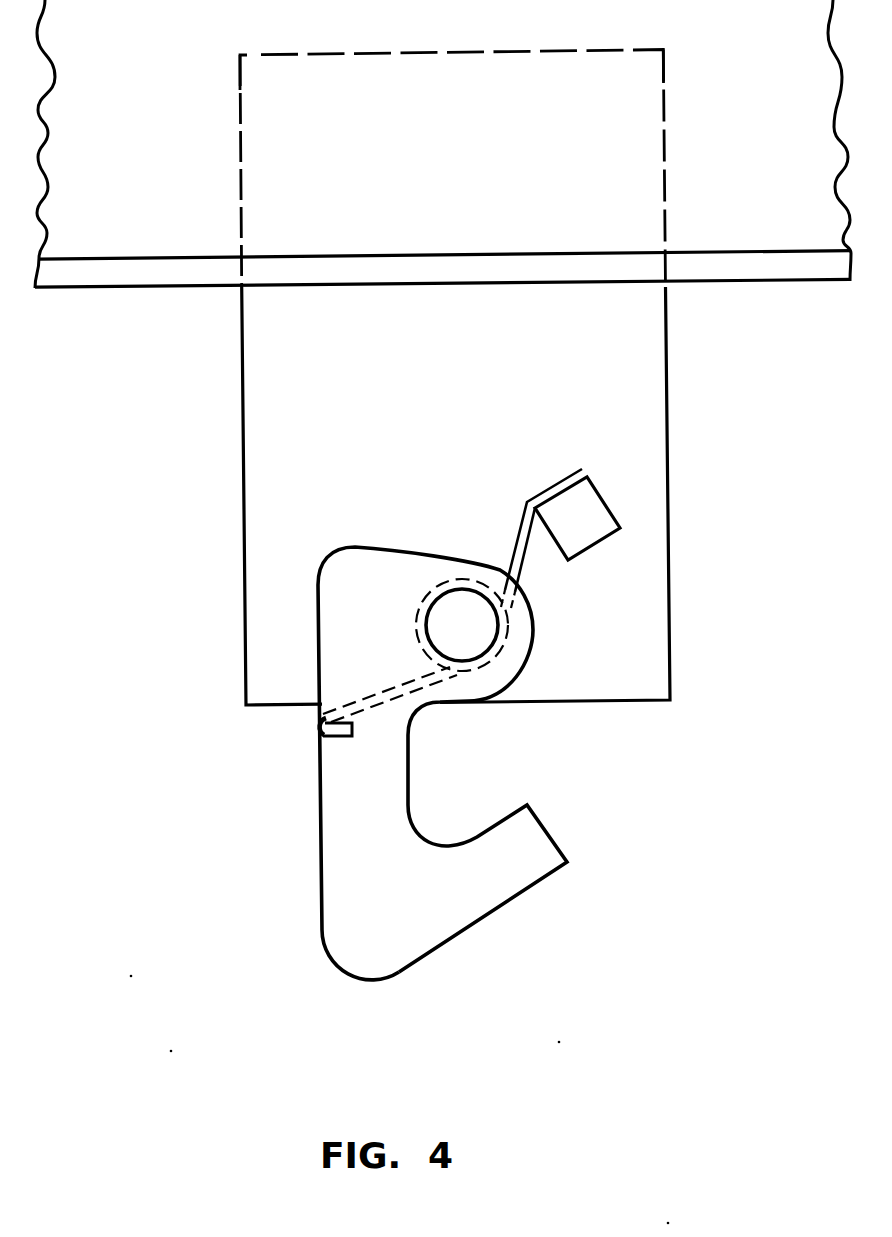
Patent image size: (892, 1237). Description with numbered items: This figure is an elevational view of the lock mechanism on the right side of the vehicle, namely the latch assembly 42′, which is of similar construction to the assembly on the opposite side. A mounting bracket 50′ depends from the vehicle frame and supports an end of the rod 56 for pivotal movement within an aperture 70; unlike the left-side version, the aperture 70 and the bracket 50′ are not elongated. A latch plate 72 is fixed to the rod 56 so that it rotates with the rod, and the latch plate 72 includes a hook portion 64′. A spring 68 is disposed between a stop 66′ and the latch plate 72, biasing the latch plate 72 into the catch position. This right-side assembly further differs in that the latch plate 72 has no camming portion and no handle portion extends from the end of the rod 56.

The latch assembly 42′ is at (496, 716).
The mounting bracket 50′ is at (642, 392).
The rod 56 is at (482, 632).
The hook portion 64′ is at (498, 878).
The stop 66′ is at (587, 513).
The spring 68 is at (520, 528).
The aperture 70 is at (432, 590).
The latch plate 72 is at (340, 841).